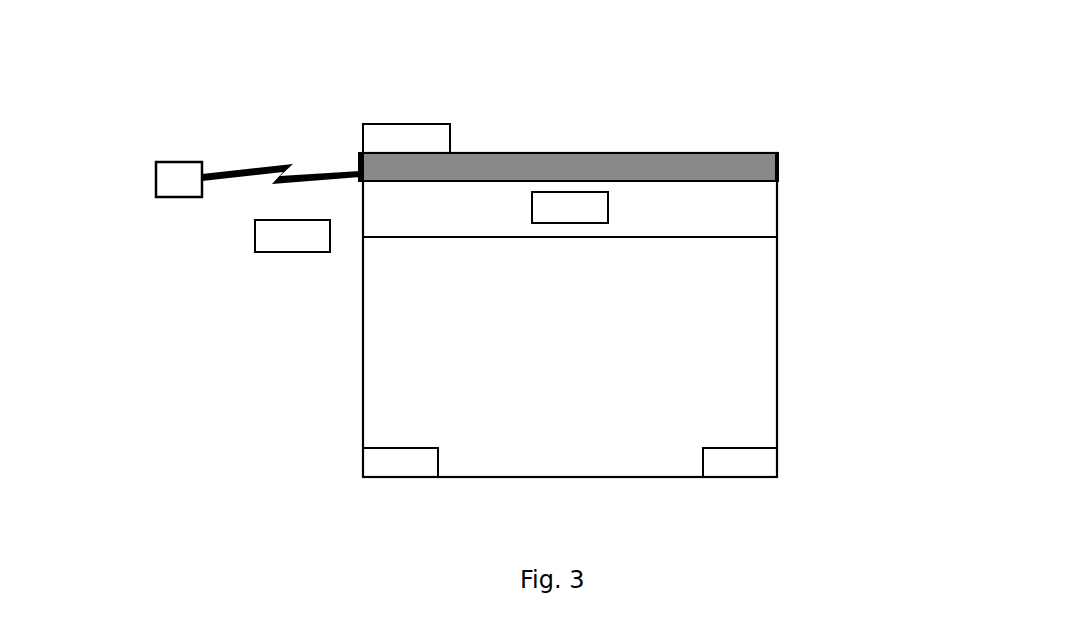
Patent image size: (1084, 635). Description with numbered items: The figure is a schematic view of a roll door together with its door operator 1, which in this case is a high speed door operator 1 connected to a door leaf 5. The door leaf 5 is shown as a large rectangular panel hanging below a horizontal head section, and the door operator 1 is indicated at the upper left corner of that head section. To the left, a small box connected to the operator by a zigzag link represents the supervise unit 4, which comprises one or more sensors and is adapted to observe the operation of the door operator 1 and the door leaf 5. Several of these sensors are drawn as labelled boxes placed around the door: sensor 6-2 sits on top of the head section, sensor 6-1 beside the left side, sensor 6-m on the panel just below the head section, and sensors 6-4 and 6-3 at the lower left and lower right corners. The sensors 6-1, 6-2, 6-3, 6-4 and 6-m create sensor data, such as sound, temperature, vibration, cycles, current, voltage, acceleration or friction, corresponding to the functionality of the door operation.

The door operator 1 is at (547, 242).
The supervise unit 4 is at (211, 128).
The door leaf 5 is at (651, 284).
The sensor 6-1 is at (292, 236).
The sensor 6-2 is at (406, 138).
The sensor 6-3 is at (740, 462).
The sensor 6-4 is at (400, 462).
The sensor 6-m is at (570, 207).